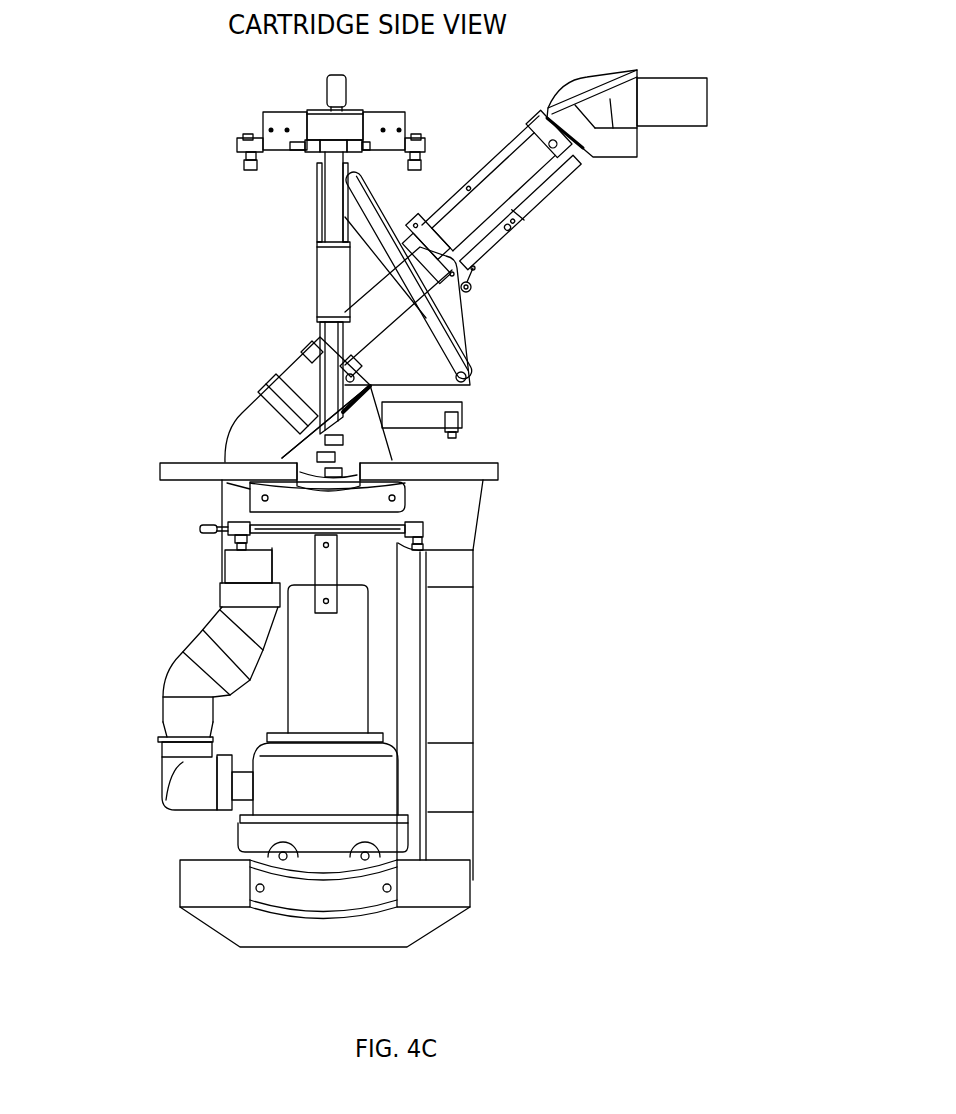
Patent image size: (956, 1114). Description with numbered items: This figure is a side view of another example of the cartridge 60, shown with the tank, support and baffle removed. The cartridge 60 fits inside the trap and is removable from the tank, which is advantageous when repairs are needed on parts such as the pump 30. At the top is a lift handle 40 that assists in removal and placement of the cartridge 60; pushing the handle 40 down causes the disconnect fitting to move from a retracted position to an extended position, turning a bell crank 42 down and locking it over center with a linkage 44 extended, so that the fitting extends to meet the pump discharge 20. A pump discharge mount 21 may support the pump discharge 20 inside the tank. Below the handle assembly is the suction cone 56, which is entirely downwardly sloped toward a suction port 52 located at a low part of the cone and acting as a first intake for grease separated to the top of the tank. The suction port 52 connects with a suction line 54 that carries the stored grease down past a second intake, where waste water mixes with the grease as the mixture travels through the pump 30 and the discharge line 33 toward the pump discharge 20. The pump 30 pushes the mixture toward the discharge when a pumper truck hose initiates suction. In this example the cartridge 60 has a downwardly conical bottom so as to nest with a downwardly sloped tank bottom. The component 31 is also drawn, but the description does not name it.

The pump discharge 20 is at (695, 86).
The pump discharge mount 21 is at (622, 152).
The pump 30 is at (377, 797).
The pump motor 31 is at (343, 707).
The discharge line 33 is at (175, 690).
The lift handle 40 is at (328, 84).
The bell crank 42 is at (449, 316).
The linkage 44 is at (527, 177).
The suction port 52 is at (470, 498).
The suction line 54 is at (465, 623).
The suction cone 56 is at (172, 472).
The cartridge 60 is at (479, 109).